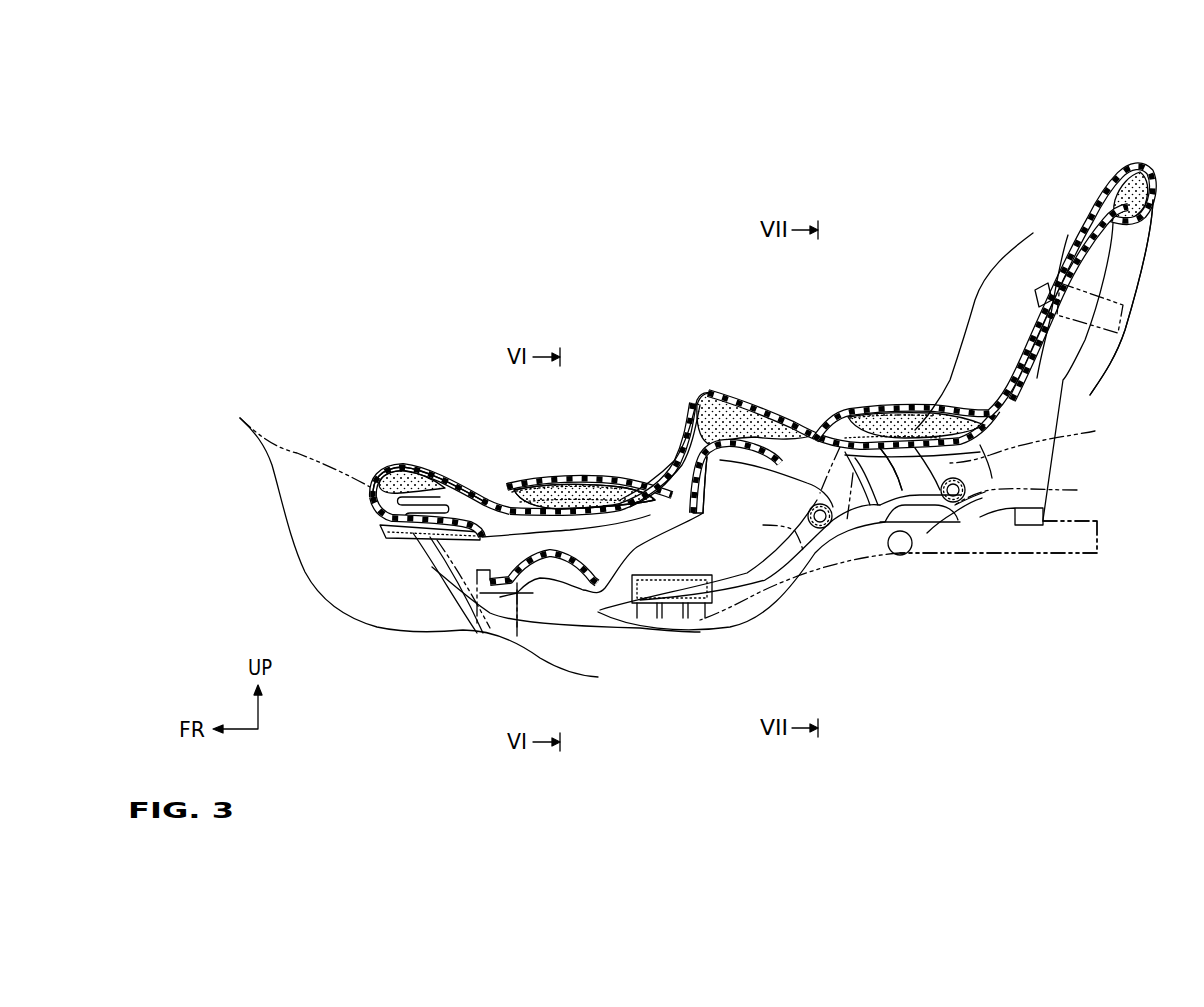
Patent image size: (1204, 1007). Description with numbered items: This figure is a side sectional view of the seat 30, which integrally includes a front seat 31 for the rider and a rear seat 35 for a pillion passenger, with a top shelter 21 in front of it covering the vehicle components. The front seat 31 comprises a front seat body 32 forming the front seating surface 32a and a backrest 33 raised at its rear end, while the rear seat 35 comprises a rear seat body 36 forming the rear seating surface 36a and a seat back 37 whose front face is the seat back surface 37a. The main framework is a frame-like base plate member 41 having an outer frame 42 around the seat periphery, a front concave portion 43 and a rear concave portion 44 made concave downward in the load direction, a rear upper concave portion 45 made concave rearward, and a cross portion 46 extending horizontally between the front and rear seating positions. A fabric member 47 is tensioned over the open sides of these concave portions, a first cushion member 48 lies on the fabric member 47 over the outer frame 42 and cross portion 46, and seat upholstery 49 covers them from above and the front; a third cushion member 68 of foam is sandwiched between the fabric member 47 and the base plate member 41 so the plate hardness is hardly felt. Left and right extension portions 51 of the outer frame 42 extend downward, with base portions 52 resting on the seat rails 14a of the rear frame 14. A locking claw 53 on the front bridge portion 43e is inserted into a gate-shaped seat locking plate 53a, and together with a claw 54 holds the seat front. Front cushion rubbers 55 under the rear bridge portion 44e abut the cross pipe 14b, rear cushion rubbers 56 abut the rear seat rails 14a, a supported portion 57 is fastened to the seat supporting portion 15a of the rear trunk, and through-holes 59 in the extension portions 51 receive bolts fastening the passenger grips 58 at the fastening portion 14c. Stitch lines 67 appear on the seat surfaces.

The rear frame 14 is at (1031, 579).
The seat rail 14a is at (1073, 543).
The cross pipe 14b is at (900, 545).
The fastening portion 14c is at (857, 528).
The seat supporting portion 15a is at (1125, 308).
The top shelter 21 is at (304, 450).
The seat 30 is at (610, 395).
The front seat 31 is at (463, 432).
The front seat body 32 is at (584, 456).
The front seating surface 32a is at (560, 480).
The backrest 33 is at (713, 387).
The rear seat 35 is at (879, 367).
The rear seat body 36 is at (902, 400).
The rear seating surface 36a is at (887, 410).
The seat back 37 is at (1039, 280).
The seat back surface 37a is at (1055, 253).
The base plate member 41 is at (424, 575).
The outer frame 42 is at (417, 497).
The front concave portion 43 is at (567, 537).
The front bridge portion 43e is at (550, 557).
The rear concave portion 44 is at (900, 467).
The rear bridge portion 44e is at (927, 535).
The rear upper concave portion 45 is at (1047, 345).
The cross portion 46 is at (718, 445).
The fabric member 47 is at (653, 503).
The first cushion member 48 is at (387, 480).
The seat upholstery 49 is at (420, 463).
The extension portion 51 is at (730, 613).
The base portion 52 is at (670, 592).
The locking claw 53 is at (500, 592).
The seat locking plate 53a is at (521, 635).
The claw 54 is at (393, 537).
The front cushion rubber 55 is at (887, 522).
The rear cushion rubber 56 is at (1023, 525).
The supported portion 57 is at (1040, 300).
The passenger grip 58 is at (1036, 371).
The through-hole 59 is at (823, 530).
The stitch line 67 is at (530, 488).
The third cushion member 68 is at (480, 500).